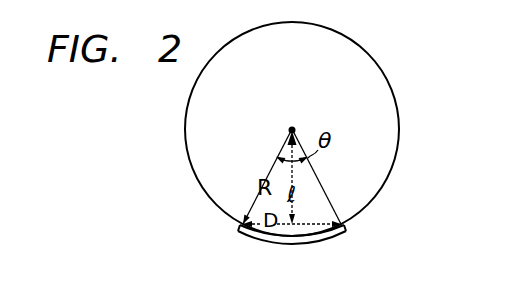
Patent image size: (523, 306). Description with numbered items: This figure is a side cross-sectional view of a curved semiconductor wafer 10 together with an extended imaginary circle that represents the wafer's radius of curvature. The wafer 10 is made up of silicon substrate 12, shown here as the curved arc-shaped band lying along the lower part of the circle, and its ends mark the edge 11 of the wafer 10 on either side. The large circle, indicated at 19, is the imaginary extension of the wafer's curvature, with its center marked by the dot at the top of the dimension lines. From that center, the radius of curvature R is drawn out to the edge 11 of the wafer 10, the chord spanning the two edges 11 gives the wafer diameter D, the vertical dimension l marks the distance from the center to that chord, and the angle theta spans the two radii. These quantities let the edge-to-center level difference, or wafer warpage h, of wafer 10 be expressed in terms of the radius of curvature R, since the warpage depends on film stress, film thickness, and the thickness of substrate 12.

The semiconductor wafer 10 is at (283, 119).
The outer circumferential surface 19 is at (376, 41).
The edge of wafer 11 is at (238, 228).
The silicon substrate 12 is at (304, 247).